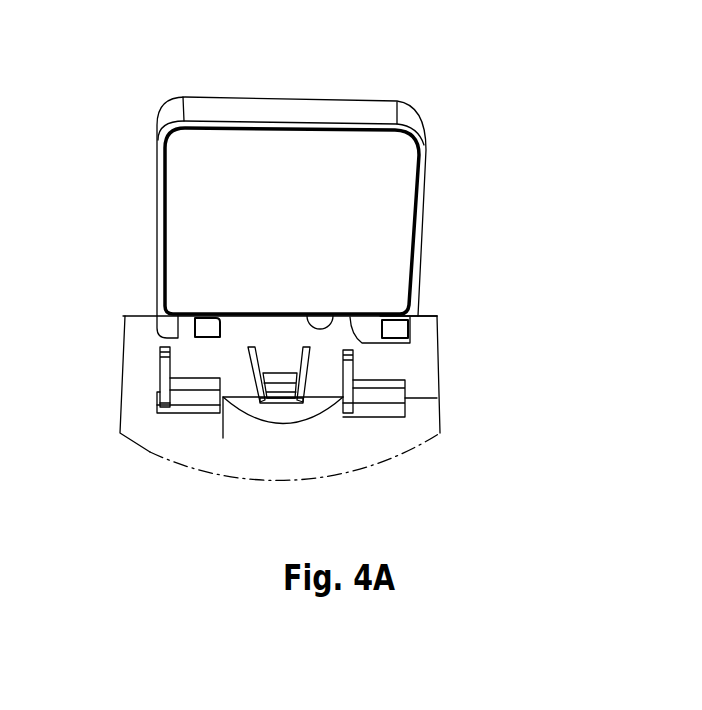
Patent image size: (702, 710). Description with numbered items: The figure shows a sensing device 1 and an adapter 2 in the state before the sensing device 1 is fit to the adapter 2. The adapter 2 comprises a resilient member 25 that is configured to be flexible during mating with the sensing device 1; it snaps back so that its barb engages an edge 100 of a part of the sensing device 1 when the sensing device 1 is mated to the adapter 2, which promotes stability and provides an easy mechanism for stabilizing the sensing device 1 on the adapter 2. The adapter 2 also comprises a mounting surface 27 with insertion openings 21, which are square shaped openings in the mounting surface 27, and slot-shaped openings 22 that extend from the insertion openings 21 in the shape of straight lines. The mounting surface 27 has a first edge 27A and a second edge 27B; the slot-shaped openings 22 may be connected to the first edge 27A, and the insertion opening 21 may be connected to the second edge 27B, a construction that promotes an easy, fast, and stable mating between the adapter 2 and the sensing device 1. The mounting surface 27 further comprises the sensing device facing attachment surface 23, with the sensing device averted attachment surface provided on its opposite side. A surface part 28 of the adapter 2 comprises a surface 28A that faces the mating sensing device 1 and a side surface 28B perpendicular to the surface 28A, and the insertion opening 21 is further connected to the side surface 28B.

The sensing device 1 is at (455, 78).
The adapter 2 is at (492, 411).
The edge 100 is at (337, 317).
The insertion openings 21 is at (362, 400).
The slot-shaped openings 22 is at (162, 373).
The sensing device facing attachment surface 23 is at (187, 352).
The resilient member 25 is at (272, 355).
The mounting surface 27 is at (142, 342).
The first edge 27A is at (163, 365).
The second edge 27B is at (172, 380).
The surface part 28 is at (448, 402).
The surface 28A is at (422, 375).
The side surface 28B is at (408, 430).